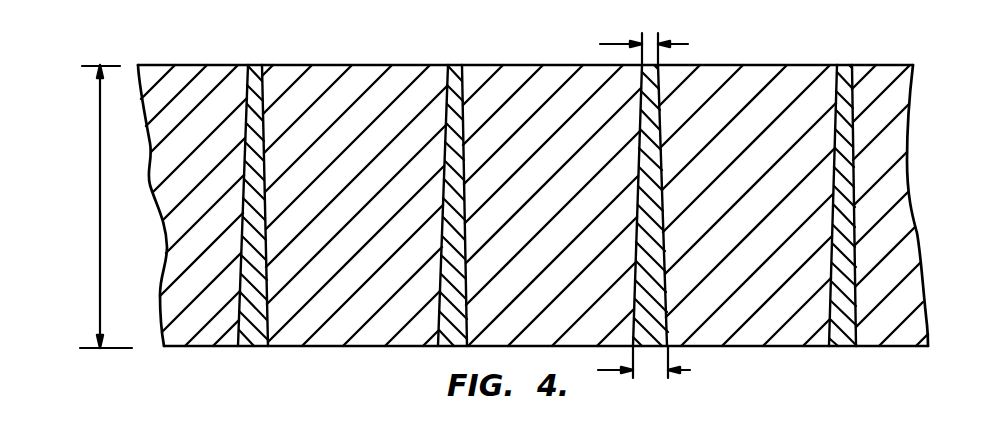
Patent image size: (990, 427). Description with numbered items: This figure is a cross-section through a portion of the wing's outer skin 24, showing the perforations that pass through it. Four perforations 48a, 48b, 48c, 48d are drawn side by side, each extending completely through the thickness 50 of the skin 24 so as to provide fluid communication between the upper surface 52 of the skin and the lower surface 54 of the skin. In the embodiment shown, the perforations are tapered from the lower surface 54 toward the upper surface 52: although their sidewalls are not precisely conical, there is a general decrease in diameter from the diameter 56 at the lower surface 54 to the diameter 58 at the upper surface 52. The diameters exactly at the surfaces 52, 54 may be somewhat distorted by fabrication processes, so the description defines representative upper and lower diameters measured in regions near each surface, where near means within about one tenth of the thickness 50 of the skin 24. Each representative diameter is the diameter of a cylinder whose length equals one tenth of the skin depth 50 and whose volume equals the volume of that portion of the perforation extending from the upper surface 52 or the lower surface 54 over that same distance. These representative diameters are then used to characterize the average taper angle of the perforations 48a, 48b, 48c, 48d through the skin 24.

The skin 24 is at (890, 171).
The perforation 48a is at (258, 65).
The perforation 48b is at (457, 65).
The perforation 48c is at (642, 83).
The perforation 48d is at (848, 65).
The thickness of the skin 50 is at (99, 209).
The upper surface of the skin 52 is at (366, 65).
The lower surface of the skin 54 is at (305, 347).
The diameter at the lower surface 56 is at (690, 370).
The diameter at the upper surface 58 is at (686, 44).